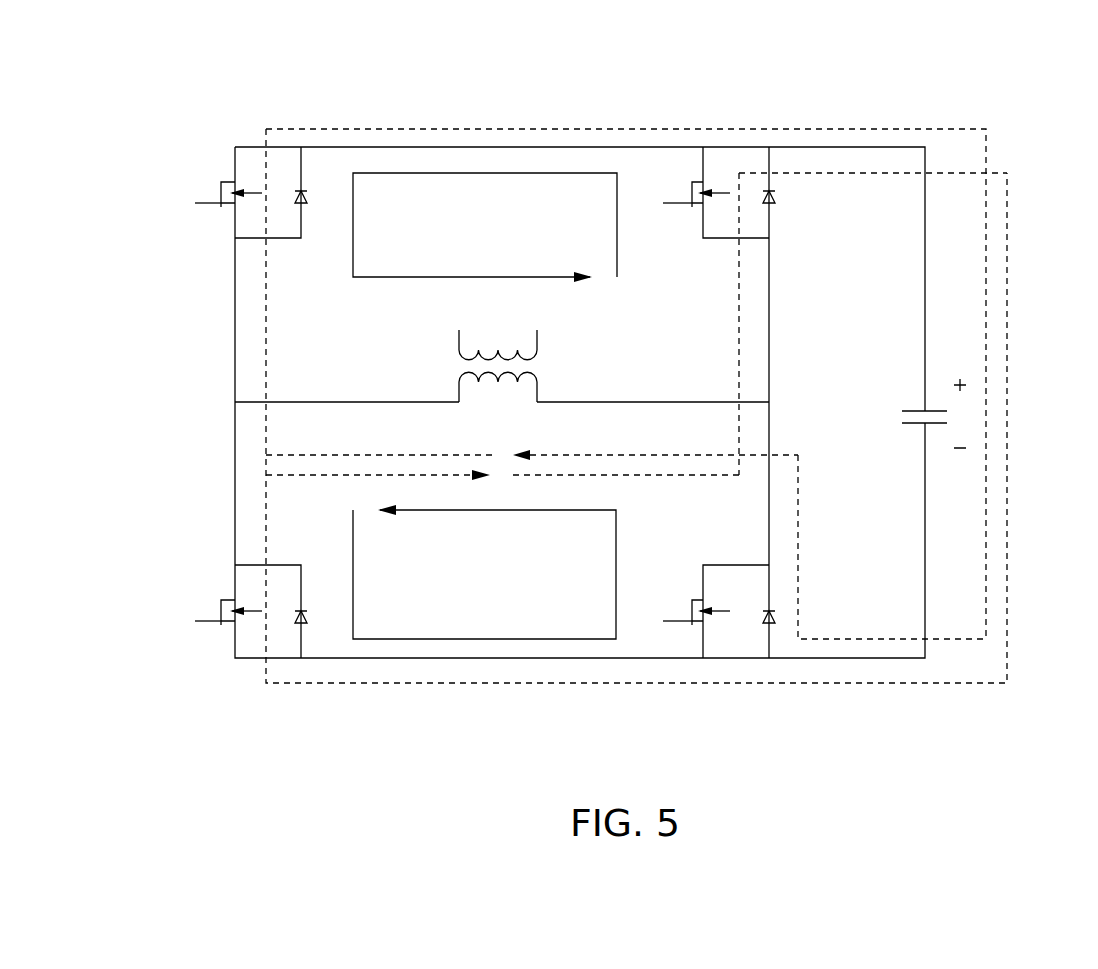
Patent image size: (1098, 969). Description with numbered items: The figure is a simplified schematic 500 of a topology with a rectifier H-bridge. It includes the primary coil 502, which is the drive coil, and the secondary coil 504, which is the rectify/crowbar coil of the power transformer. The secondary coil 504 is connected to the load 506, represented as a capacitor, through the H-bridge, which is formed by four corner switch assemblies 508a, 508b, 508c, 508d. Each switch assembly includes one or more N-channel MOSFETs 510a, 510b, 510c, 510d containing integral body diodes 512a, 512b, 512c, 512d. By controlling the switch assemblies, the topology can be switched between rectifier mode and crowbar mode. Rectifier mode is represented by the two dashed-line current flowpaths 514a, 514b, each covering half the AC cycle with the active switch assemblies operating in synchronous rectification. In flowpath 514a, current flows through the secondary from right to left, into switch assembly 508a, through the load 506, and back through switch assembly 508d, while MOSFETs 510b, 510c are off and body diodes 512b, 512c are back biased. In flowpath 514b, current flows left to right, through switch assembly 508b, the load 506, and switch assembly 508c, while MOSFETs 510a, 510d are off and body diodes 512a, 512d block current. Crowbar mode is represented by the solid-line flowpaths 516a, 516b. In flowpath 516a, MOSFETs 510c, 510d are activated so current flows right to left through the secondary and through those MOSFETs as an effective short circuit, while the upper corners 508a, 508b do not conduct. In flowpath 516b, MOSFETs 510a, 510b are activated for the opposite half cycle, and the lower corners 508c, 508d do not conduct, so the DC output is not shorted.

The simplified schematic 500 is at (898, 103).
The primary coil 502 is at (537, 339).
The secondary coil 504 is at (537, 392).
The load 506 is at (913, 426).
The switch assembly 508a is at (250, 150).
The switch assembly 508b is at (740, 150).
The switch assembly 508c is at (232, 652).
The switch assembly 508d is at (740, 670).
The N-channel MOSFET 510a is at (220, 195).
The N-channel MOSFET 510b is at (692, 181).
The N-channel MOSFET 510c is at (231, 599).
The N-channel MOSFET 510d is at (702, 626).
The body diode 512a is at (303, 190).
The body diode 512b is at (772, 200).
The body diode 512c is at (305, 617).
The body diode 512d is at (773, 621).
The current flowpath 514a is at (268, 313).
The current flowpath 514b is at (1007, 562).
The current flowpath 516a is at (490, 511).
The current flowpath 516b is at (450, 174).